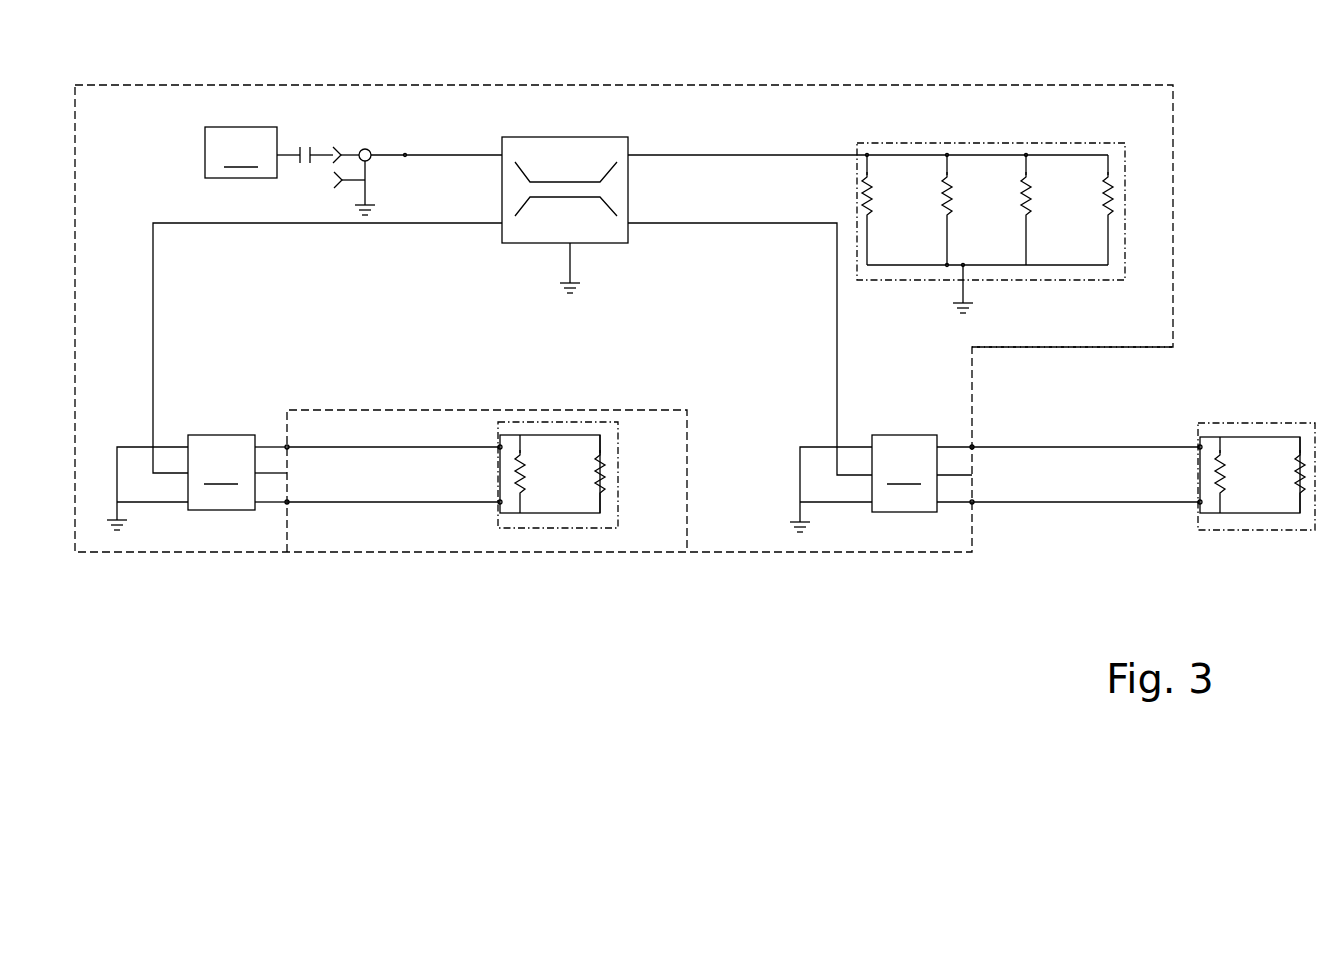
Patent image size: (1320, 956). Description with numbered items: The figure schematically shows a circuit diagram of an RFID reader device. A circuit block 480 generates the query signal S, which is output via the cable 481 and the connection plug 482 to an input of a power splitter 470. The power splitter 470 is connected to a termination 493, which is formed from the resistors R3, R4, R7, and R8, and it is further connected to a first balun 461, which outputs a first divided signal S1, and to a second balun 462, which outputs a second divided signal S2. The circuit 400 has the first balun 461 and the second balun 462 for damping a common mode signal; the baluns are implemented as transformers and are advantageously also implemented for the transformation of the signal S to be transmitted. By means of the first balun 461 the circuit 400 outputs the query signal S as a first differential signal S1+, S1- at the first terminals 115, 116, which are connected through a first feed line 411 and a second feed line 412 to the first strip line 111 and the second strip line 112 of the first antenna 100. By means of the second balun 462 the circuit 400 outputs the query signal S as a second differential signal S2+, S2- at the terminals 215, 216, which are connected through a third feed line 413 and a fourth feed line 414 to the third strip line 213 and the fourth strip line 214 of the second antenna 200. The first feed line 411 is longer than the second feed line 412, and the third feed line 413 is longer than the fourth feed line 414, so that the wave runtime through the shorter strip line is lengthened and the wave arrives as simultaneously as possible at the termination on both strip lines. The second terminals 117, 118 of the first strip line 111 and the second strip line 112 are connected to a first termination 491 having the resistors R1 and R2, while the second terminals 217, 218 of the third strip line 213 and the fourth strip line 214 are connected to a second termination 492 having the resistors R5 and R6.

The circuit 400 is at (792, 84).
The first antenna 100 is at (420, 527).
The second antenna 200 is at (1115, 527).
The circuit block 480 is at (269, 152).
The cable 481 is at (333, 153).
The connection plug 482 is at (405, 154).
The power splitter 470 is at (548, 153).
The termination 493 is at (876, 209).
The first balun 461 is at (197, 482).
The second balun 462 is at (881, 483).
The first feed line 411 is at (268, 445).
The second feed line 412 is at (262, 506).
The third feed line 413 is at (950, 445).
The fourth feed line 414 is at (948, 508).
The first terminal 115 is at (287, 445).
The second terminal 116 is at (287, 505).
The first strip line 111 is at (458, 445).
The second strip line 112 is at (462, 506).
The second terminal of the first strip line 117 is at (499, 446).
The second terminal of the second strip line 118 is at (499, 504).
The third terminal 215 is at (972, 446).
The fourth terminal 216 is at (972, 506).
The third strip line 213 is at (1160, 446).
The fourth strip line 214 is at (1157, 506).
The second terminal of the third strip line 217 is at (1199, 446).
The second terminal of the fourth strip line 218 is at (1199, 504).
The first termination 491 is at (558, 511).
The second termination 492 is at (1256, 513).
The query signal S is at (440, 153).
The first divided signal S1 is at (157, 283).
The second divided signal S2 is at (833, 286).
The first differential signal negative component S1- is at (333, 506).
The second differential signal negative component S2- is at (1032, 506).
The resistor R1 is at (540, 474).
The resistor R2 is at (579, 474).
The resistor R3 is at (886, 199).
The resistor R4 is at (966, 199).
The resistor R5 is at (1241, 474).
The resistor R6 is at (1280, 474).
The resistor R7 is at (1008, 199).
The resistor R8 is at (1090, 199).